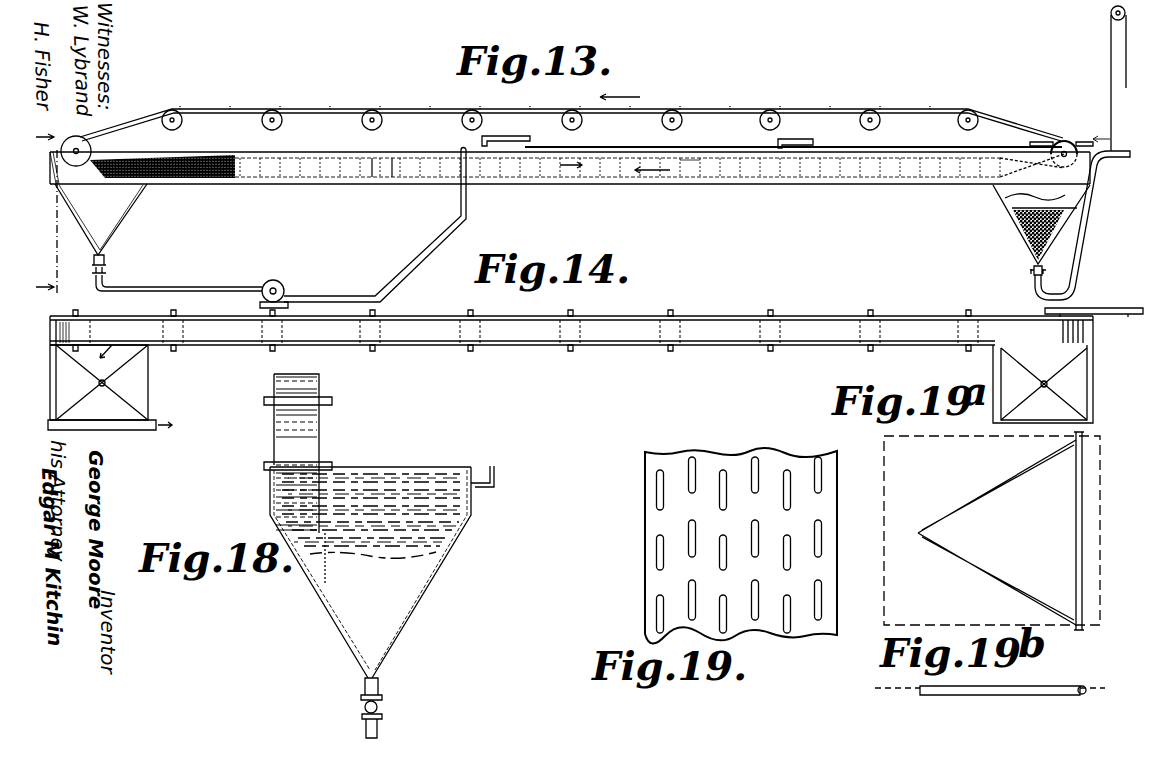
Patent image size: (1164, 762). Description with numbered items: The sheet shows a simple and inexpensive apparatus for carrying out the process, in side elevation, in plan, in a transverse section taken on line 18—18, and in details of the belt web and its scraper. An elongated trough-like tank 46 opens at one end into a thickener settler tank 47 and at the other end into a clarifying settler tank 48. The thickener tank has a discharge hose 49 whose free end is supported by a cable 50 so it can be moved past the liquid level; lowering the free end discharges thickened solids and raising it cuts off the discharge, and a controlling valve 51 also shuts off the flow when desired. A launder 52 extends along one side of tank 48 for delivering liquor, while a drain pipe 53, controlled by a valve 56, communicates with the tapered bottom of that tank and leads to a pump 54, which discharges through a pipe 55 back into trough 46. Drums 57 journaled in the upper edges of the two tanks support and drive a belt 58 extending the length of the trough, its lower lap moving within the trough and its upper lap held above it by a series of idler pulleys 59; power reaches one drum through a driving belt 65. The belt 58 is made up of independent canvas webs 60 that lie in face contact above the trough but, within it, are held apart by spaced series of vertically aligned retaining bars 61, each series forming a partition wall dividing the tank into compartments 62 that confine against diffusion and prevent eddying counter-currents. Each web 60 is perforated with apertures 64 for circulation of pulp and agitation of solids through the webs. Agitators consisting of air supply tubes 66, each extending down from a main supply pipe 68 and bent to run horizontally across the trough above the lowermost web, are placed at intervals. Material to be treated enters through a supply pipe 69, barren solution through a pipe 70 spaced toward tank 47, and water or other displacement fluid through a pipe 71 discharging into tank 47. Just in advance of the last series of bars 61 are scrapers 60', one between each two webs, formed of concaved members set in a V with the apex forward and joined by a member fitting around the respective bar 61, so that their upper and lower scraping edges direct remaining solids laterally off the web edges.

In FIG. 13, the section line 18 is at (35, 211).
In FIG. 13, the trough-like tank 46 is at (525, 172).
In FIG. 14, the trough-like tank 46 is at (520, 317).
In FIG. 18, the trough-like tank 46 is at (270, 495).
In FIG. 13, the thickener settler tank 47 is at (1010, 215).
In FIG. 14, the thickener settler tank 47 is at (1095, 380).
In FIG. 13, the clarifying settler tank 48 is at (125, 218).
In FIG. 14, the clarifying settler tank 48 is at (150, 386).
In FIG. 18, the clarifying settler tank 48 is at (472, 520).
In FIG. 13, the discharge hose 49 is at (1086, 228).
In FIG. 13, the cable 50 is at (1109, 91).
In FIG. 13, the controlling valve 51 is at (1034, 276).
In FIG. 14, the launder 52 is at (110, 430).
In FIG. 18, the launder 52 is at (495, 473).
In FIG. 13, the drain pipe 53 is at (108, 263).
In FIG. 18, the drain pipe 53 is at (382, 690).
In FIG. 13, the pump 54 is at (273, 284).
In FIG. 13, the pipe 55 is at (425, 252).
In FIG. 13, the valve 56 is at (94, 286).
In FIG. 18, the valve 56 is at (385, 709).
In FIG. 13, the drums 57 is at (76, 150).
In FIG. 13, the belt 58 is at (405, 111).
In FIG. 14, the belt 58 is at (445, 346).
In FIG. 13, the idler pulleys 59 is at (185, 124).
In FIG. 13, the webs 60 is at (162, 188).
In FIG. 19, the webs 60 is at (718, 546).
In FIG. 19A, the webs 60 is at (976, 530).
In FIG. 19B, the webs 60 is at (990, 706).
In FIG. 19A, the scrapers 60' is at (997, 532).
In FIG. 19B, the scrapers 60' is at (1000, 705).
In FIG. 19A, the retaining bars 61 is at (1083, 480).
In FIG. 19B, the retaining bars 61 is at (1088, 697).
In FIG. 13, the compartments 62 is at (394, 182).
In FIG. 19, the apertures 64 is at (755, 462).
In FIG. 13, the driving belt 65 is at (1110, 308).
In FIG. 13, the air supply tube 66 is at (630, 150).
In FIG. 13, the main supply pipe 68 is at (692, 152).
In FIG. 13, the supply pipe 69 is at (506, 130).
In FIG. 14, the supply pipe 69 is at (440, 312).
In FIG. 13, the barren solution supply pipe 70 is at (776, 141).
In FIG. 13, the water supply pipe 71 is at (1050, 141).